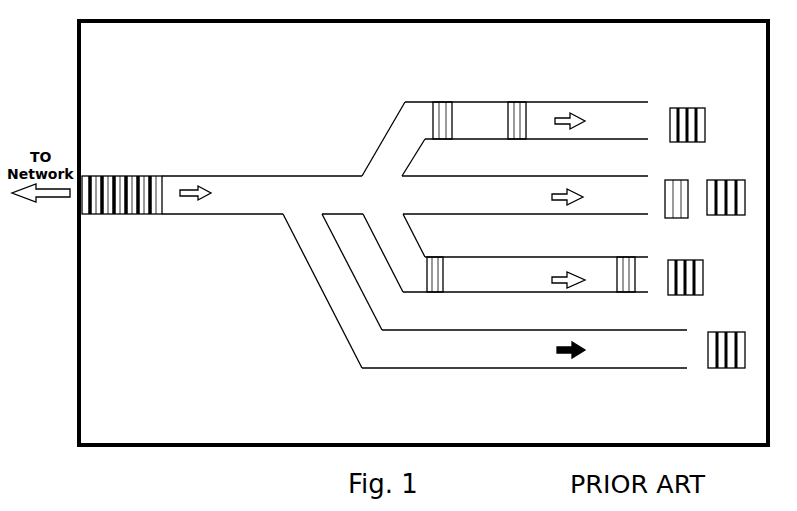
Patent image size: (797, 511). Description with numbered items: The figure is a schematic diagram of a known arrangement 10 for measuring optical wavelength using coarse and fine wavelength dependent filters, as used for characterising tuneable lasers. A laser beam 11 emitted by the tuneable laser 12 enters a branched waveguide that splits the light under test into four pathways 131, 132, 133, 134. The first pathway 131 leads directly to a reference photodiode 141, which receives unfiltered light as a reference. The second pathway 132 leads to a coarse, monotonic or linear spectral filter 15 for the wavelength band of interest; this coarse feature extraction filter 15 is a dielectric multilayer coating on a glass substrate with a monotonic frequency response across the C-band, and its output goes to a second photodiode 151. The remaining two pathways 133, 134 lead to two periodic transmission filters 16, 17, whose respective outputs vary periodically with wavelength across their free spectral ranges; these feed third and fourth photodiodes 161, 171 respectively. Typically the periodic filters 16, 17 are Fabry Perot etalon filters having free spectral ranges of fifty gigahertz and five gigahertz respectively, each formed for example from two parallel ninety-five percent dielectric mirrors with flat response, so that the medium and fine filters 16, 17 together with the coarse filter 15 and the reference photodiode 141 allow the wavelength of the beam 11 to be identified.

The known arrangement 10 is at (214, 85).
The laser beam 11 is at (201, 215).
The tuneable laser 12 is at (128, 174).
The pathway 131 is at (333, 311).
The pathway 132 is at (484, 185).
The pathway 133 is at (371, 143).
The pathway 134 is at (370, 232).
The reference photodiode 141 is at (707, 369).
The coarse spectral filter 15 is at (664, 182).
The second photodiode 151 is at (716, 181).
The periodic transmission filter 16 is at (477, 101).
The third photodiode 161 is at (706, 113).
The periodic transmission filter 17 is at (467, 277).
The fourth photodiode 171 is at (704, 292).